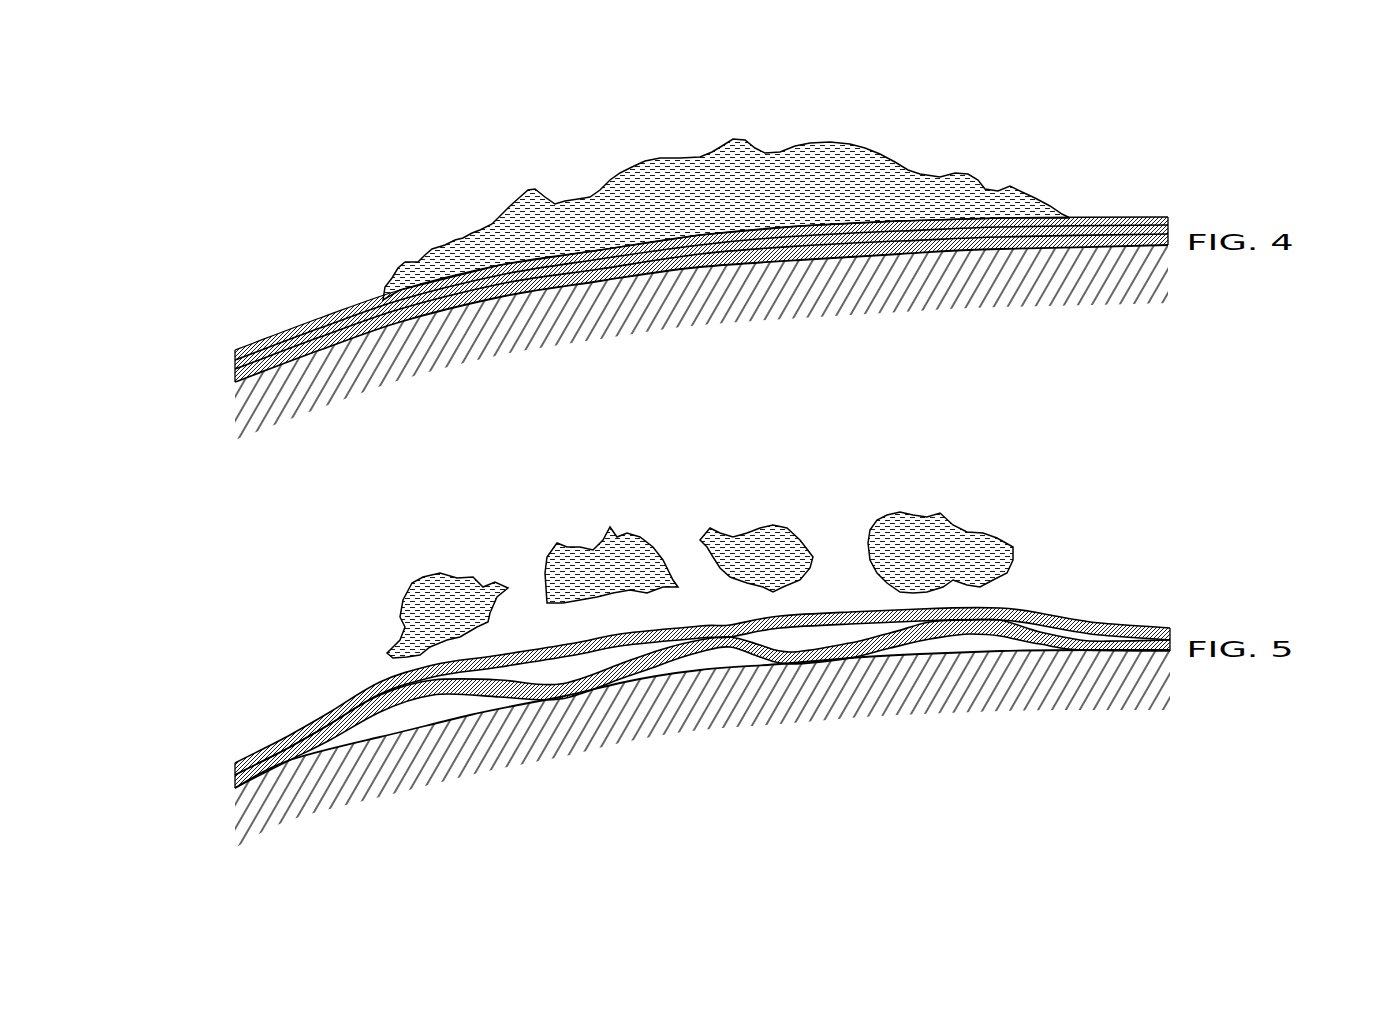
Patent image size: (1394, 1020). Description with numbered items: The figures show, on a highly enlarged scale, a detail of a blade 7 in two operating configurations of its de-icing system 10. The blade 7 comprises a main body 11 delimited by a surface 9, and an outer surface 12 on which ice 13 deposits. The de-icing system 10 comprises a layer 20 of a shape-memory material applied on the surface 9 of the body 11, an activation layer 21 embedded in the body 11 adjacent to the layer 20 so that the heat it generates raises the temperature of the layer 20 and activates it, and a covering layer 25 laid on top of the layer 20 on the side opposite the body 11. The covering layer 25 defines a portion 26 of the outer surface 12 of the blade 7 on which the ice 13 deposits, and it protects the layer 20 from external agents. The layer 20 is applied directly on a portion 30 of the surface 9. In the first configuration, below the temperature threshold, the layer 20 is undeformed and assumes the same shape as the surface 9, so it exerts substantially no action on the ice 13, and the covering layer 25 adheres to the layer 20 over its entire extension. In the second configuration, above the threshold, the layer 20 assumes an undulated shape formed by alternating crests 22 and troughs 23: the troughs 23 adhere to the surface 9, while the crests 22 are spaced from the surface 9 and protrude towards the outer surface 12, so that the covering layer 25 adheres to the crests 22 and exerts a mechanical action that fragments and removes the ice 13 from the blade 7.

In FIG. 4, the blade 7 is at (1138, 152).
In FIG. 5, the blade 7 is at (1133, 568).
In FIG. 4, the surface 9 is at (344, 336).
In FIG. 5, the surface 9 is at (386, 684).
In FIG. 4, the de-icing system 10 is at (1084, 202).
In FIG. 5, the de-icing system 10 is at (1066, 600).
In FIG. 4, the main body 11 is at (748, 380).
In FIG. 5, the main body 11 is at (760, 774).
In FIG. 4, the outer surface 12 is at (300, 322).
In FIG. 5, the outer surface 12 is at (292, 742).
In FIG. 4, the ice 13 is at (837, 180).
In FIG. 5, the ice 13 is at (450, 600).
In FIG. 4, the layer of shape-memory material 20 is at (234, 370).
In FIG. 5, the layer of shape-memory material 20 is at (730, 650).
In FIG. 4, the activation layer 21 is at (313, 378).
In FIG. 5, the activation layer 21 is at (293, 793).
In FIG. 5, the crests 22 is at (433, 695).
In FIG. 5, the troughs 23 is at (578, 688).
In FIG. 4, the covering layer 25 is at (244, 332).
In FIG. 5, the covering layer 25 is at (258, 742).
In FIG. 4, the portion of the surface 26 is at (1139, 212).
In FIG. 5, the portion of the surface 26 is at (1152, 620).
In FIG. 4, the portion of surface 30 is at (602, 270).
In FIG. 5, the portion of surface 30 is at (996, 640).